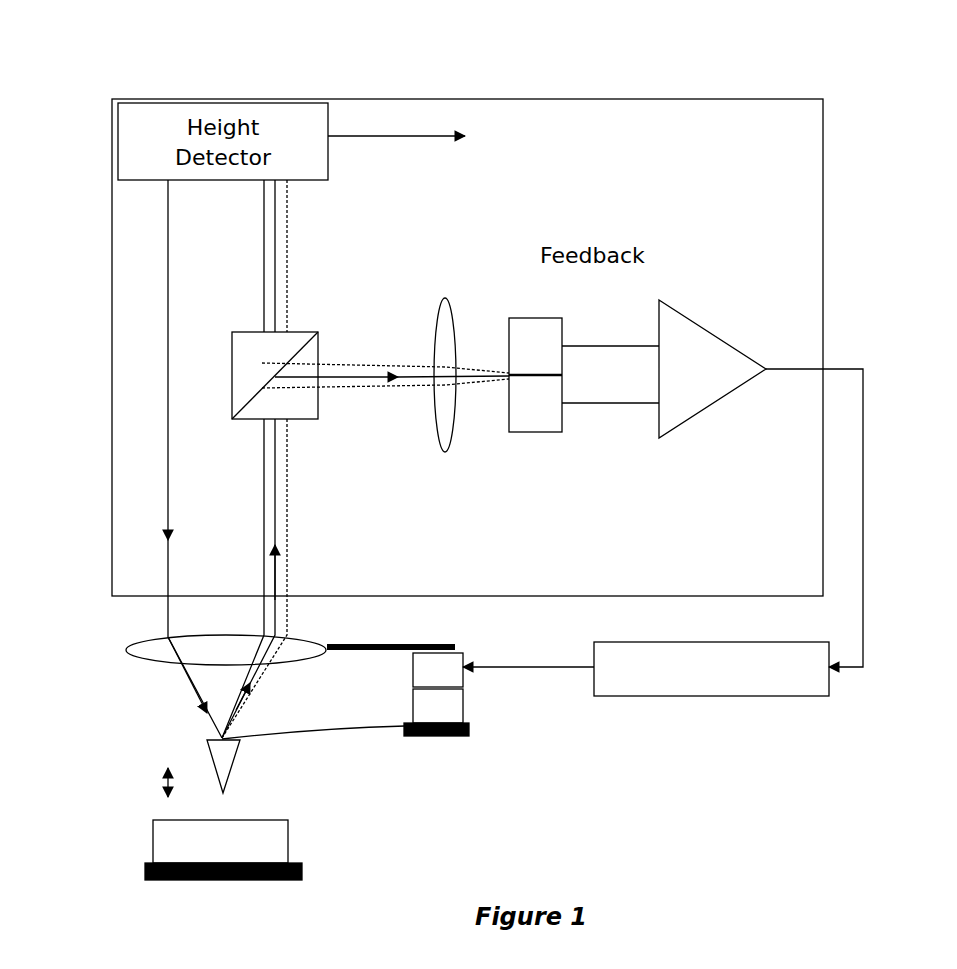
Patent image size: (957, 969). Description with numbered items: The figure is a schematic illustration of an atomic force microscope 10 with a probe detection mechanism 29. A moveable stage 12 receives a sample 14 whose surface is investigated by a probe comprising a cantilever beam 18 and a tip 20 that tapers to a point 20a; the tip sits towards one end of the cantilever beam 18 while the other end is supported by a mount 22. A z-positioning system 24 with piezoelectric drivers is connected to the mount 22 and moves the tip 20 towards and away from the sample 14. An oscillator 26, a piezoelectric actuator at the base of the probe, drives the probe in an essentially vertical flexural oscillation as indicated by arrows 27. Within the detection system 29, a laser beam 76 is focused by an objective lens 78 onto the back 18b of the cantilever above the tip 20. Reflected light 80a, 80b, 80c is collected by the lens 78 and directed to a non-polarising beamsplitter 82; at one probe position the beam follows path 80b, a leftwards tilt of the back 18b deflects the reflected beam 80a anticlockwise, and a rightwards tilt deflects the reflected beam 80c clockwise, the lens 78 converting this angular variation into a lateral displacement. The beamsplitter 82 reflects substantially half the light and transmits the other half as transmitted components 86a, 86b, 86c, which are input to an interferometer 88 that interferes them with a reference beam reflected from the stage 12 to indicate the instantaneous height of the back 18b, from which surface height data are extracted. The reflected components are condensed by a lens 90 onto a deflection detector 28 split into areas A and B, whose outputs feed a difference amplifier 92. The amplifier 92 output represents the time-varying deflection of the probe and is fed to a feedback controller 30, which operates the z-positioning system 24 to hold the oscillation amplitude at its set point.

The atomic force microscope 10 is at (388, 74).
The moveable stage 12 is at (302, 873).
The sample 14 is at (288, 835).
The cantilever beam 18 is at (366, 730).
The back of the cantilever 18b is at (228, 735).
The tip 20 is at (218, 756).
The point 20a is at (224, 793).
The mount 22 is at (457, 736).
The z-positioning system 24 is at (463, 655).
The oscillator 26 is at (463, 710).
The arrows 27 is at (168, 786).
The deflection detector 28 is at (535, 432).
The probe detection mechanism 29 is at (823, 205).
The feedback controller 30 is at (715, 696).
The laser beam 76 is at (168, 425).
The objective lens 78 is at (126, 651).
The reflected beam 80a is at (264, 514).
The reflected beam 80b is at (275, 523).
The reflected beam 80c is at (287, 487).
The non-polarising beamsplitter 82 is at (232, 382).
The transmitted component 86a is at (264, 283).
The transmitted component 86b is at (275, 252).
The transmitted component 86c is at (287, 226).
The interferometer 88 is at (328, 160).
The lens 90 is at (447, 298).
The difference amplifier 92 is at (738, 350).